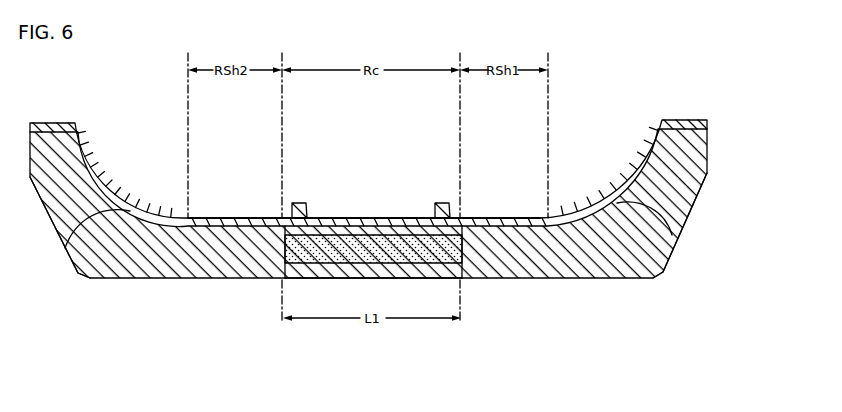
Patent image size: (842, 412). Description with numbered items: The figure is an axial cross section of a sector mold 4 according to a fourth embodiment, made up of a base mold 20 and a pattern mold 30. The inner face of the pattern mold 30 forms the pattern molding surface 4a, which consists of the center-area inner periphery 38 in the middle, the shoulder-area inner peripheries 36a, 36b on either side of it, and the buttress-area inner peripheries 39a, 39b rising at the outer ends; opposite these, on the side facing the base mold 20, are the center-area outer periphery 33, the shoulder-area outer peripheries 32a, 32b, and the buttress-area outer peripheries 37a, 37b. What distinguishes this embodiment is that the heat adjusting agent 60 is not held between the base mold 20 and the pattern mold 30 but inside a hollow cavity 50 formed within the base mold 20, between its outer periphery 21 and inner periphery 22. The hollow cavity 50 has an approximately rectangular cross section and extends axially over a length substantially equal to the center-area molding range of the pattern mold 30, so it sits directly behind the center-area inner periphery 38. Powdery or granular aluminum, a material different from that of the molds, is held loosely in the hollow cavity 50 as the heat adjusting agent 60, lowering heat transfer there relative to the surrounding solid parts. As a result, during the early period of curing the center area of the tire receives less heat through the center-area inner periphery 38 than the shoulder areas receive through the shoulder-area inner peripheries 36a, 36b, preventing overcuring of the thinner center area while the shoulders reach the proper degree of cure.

The sector mold 4 is at (783, 77).
The pattern molding surface 4a is at (333, 131).
The base mold 20 is at (714, 170).
The outer periphery 21 is at (323, 279).
The inner periphery 22 is at (400, 220).
The pattern mold 30 is at (710, 109).
The shoulder-area outer periphery 32a is at (508, 225).
The shoulder-area outer periphery 32b is at (230, 226).
The center-area outer periphery 33 is at (383, 229).
The shoulder-area inner periphery 36a is at (507, 218).
The shoulder-area inner periphery 36b is at (238, 220).
The buttress-area outer periphery 37a is at (672, 236).
The buttress-area outer periphery 37b is at (66, 249).
The center-area inner periphery 38 is at (360, 222).
The buttress-area inner periphery 39a is at (625, 183).
The buttress-area inner periphery 39b is at (122, 197).
The hollow cavity 50 is at (320, 228).
The heat adjusting agent 60 is at (338, 250).